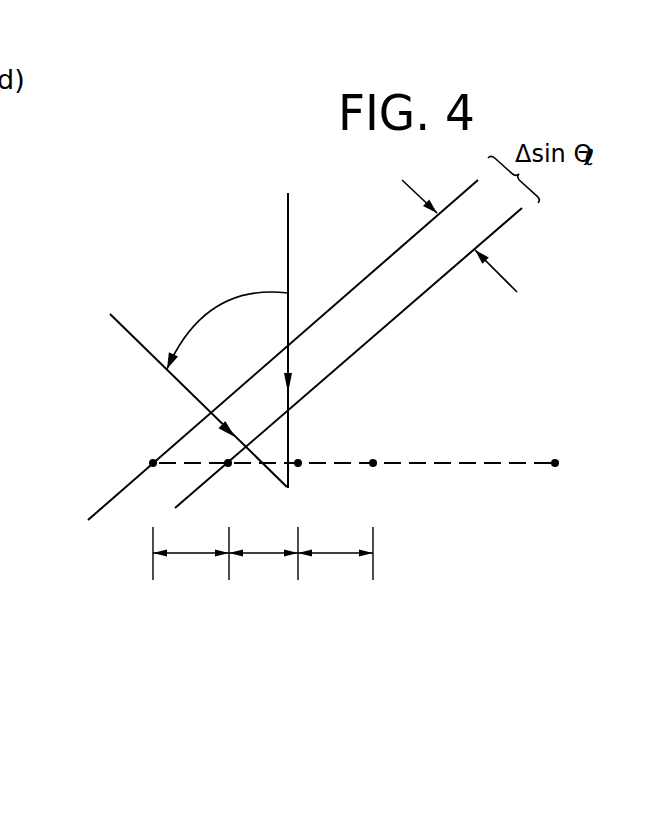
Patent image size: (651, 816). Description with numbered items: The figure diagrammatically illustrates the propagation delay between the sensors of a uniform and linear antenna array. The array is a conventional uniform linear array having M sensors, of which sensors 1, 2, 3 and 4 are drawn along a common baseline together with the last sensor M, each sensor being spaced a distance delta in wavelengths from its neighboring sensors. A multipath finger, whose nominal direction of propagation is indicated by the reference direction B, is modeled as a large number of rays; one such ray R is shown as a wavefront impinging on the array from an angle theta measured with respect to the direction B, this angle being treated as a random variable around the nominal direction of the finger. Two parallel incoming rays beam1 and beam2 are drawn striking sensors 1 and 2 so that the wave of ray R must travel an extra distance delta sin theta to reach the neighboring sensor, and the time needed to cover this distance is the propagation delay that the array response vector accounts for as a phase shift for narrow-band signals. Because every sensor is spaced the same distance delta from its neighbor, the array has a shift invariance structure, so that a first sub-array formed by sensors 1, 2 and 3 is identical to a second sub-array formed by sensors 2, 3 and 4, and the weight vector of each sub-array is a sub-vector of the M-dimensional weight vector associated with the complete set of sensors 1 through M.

The multipath finger B is at (288, 238).
The ray R is at (128, 338).
The angle of incidence theta is at (227, 321).
The sensor 1 is at (152, 481).
The sensor 2 is at (227, 481).
The sensor 3 is at (303, 481).
The sensor 4 is at (371, 481).
The sensor M is at (557, 481).
The sensor spacing delta is at (263, 558).
The incoming ray beam1 is at (283, 350).
The incoming ray beam2 is at (348, 358).